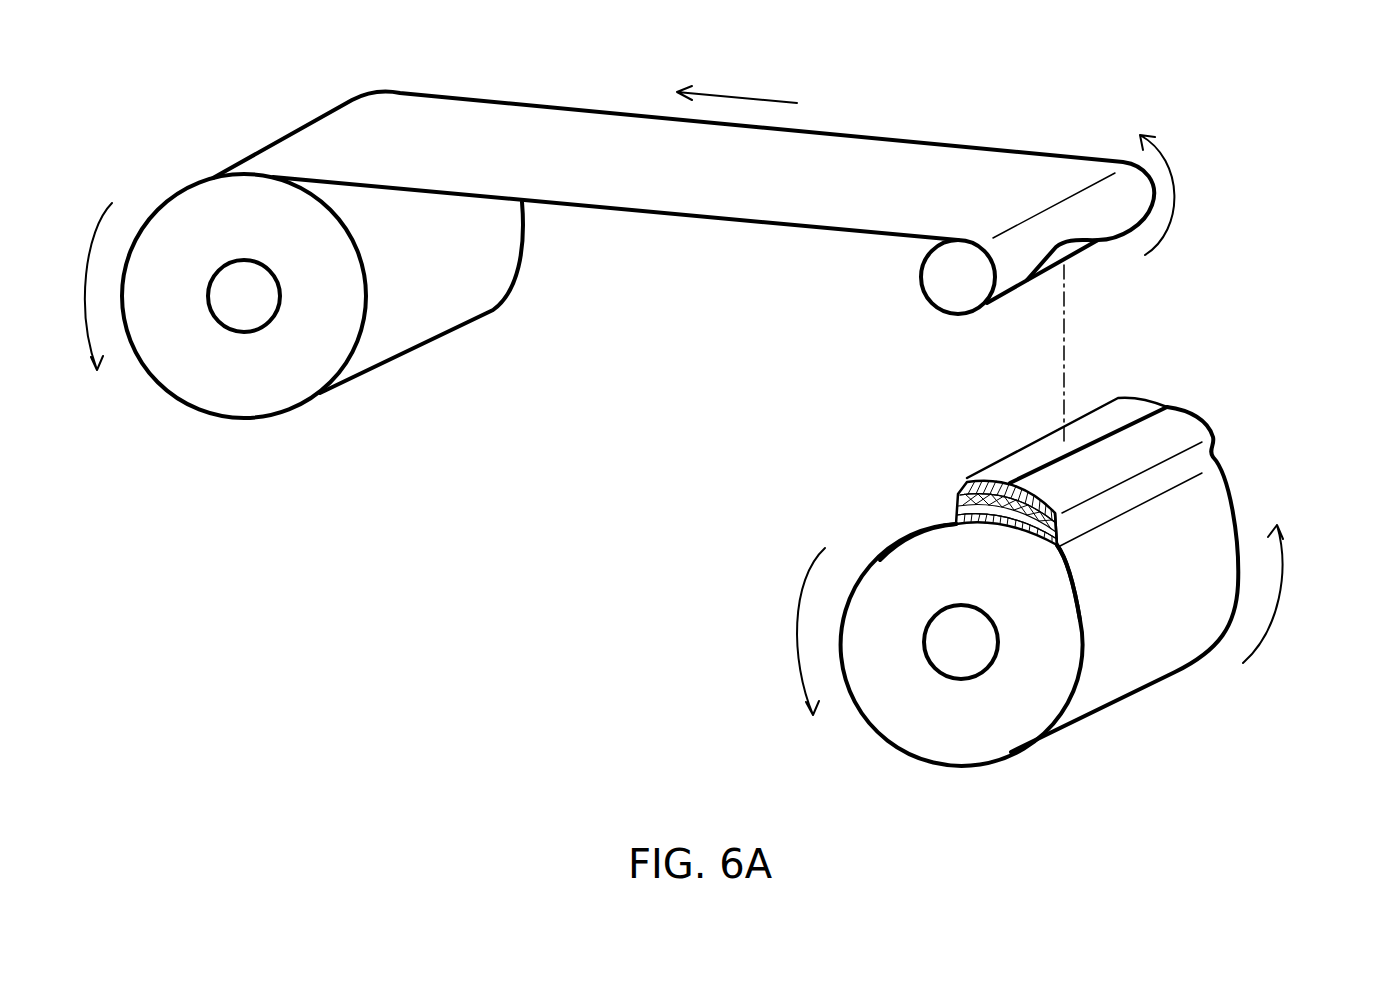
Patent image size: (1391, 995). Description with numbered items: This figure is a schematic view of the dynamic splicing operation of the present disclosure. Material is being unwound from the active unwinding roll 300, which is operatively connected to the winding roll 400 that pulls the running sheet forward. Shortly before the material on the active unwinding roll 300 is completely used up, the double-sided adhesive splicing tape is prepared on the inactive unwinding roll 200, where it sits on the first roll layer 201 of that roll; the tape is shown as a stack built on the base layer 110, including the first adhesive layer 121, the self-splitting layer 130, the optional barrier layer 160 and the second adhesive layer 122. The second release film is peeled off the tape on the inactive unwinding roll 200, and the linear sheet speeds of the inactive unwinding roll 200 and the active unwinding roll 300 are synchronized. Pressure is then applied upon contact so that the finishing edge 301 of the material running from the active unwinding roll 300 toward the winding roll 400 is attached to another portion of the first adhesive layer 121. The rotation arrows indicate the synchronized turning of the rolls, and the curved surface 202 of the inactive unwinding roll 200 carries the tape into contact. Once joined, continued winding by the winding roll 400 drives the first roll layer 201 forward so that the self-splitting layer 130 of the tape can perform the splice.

The winding roll 400 is at (183, 385).
The active unwinding roll 300 is at (955, 306).
The finishing edge 301 is at (1067, 185).
The inactive unwinding roll 200 is at (901, 731).
The first roll layer 201 is at (1160, 450).
The curved surface of transfer roller 202 is at (940, 516).
The base layer 110 is at (960, 495).
The first adhesive layer 121 is at (962, 487).
The self-splitting layer 130 is at (957, 504).
The second adhesive layer 122 is at (1025, 530).
The barrier layer 160 is at (1037, 535).